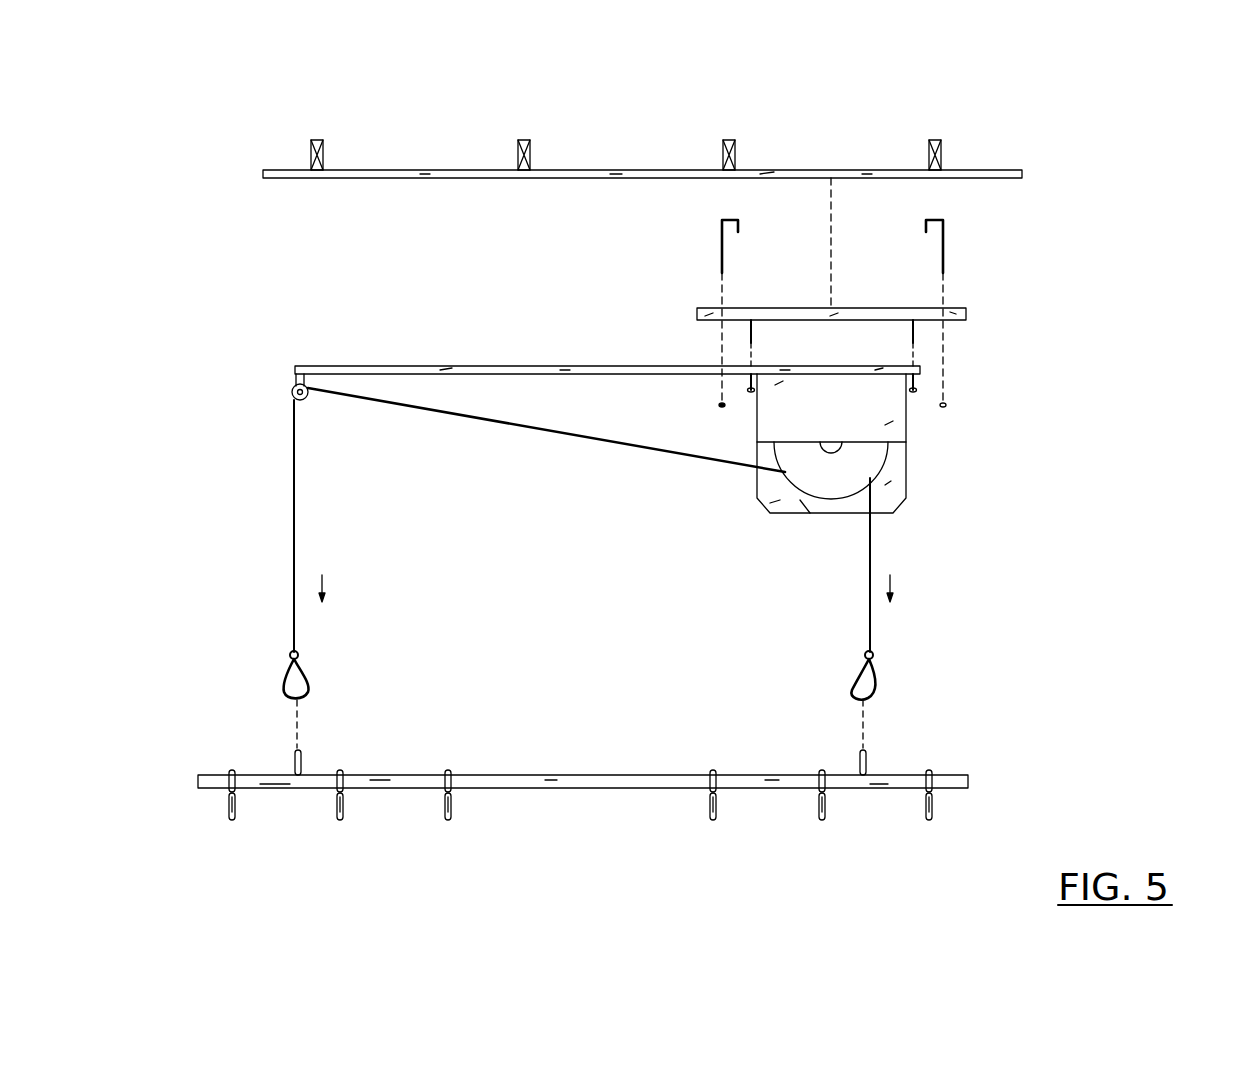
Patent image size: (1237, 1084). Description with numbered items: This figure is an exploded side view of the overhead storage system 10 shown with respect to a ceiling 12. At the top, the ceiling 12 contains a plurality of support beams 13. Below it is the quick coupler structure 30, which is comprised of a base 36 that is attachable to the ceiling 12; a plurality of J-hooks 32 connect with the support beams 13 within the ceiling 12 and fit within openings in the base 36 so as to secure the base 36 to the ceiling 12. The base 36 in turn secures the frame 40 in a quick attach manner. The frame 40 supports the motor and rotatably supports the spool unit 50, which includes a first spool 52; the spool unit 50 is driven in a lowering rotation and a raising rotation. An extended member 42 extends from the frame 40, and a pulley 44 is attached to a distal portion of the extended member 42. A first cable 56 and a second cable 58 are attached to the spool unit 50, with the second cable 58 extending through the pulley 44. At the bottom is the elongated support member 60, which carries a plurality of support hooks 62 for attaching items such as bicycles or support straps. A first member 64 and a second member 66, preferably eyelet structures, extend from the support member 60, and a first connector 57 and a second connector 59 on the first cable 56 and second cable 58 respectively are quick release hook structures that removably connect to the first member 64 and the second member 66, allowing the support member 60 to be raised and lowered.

The overhead storage system 10 is at (1122, 162).
The ceiling 12 is at (790, 168).
The support beams 13 is at (530, 156).
The quick coupler structure 30 is at (1072, 217).
The J-hooks 32 is at (720, 238).
The base 36 is at (966, 318).
The frame 40 is at (893, 420).
The extended member 42 is at (478, 368).
The pulley 44 is at (291, 394).
The spool unit 50 is at (887, 458).
The first spool 52 is at (827, 480).
The first cable 56 is at (297, 508).
The first connector 57 is at (310, 683).
The second cable 58 is at (872, 557).
The second connector 59 is at (877, 676).
The support member 60 is at (550, 777).
The support hooks 62 is at (232, 820).
The first member 64 is at (292, 760).
The second member 66 is at (858, 755).